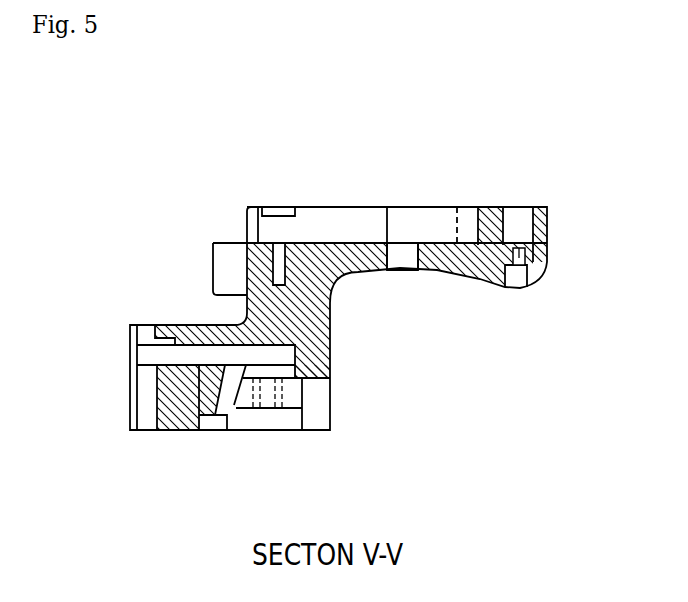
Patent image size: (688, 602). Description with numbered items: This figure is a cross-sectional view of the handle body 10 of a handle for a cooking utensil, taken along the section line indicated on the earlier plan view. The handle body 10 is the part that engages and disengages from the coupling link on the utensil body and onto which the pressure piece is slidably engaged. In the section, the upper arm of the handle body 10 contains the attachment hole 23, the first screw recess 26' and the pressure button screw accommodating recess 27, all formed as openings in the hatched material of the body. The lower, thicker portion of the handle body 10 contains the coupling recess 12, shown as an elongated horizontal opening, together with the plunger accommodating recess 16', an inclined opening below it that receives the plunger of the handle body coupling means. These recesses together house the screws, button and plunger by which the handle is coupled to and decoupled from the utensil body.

The handle body 10 is at (324, 269).
The coupling recess 12 is at (168, 358).
The plunger accommodating recess 16' is at (265, 432).
The attachment hole 23 is at (397, 257).
The first screw recess 26' is at (331, 193).
The pressure button screw accommodating recess 27 is at (523, 265).